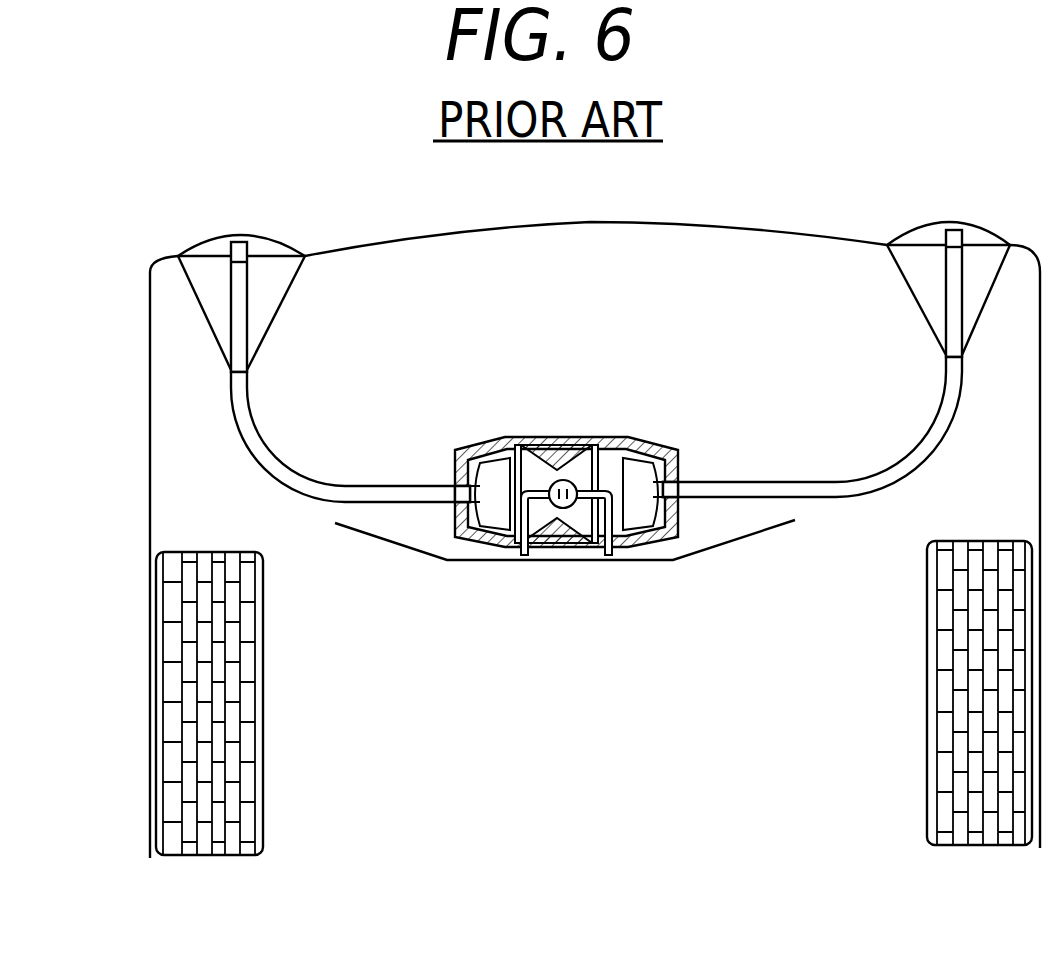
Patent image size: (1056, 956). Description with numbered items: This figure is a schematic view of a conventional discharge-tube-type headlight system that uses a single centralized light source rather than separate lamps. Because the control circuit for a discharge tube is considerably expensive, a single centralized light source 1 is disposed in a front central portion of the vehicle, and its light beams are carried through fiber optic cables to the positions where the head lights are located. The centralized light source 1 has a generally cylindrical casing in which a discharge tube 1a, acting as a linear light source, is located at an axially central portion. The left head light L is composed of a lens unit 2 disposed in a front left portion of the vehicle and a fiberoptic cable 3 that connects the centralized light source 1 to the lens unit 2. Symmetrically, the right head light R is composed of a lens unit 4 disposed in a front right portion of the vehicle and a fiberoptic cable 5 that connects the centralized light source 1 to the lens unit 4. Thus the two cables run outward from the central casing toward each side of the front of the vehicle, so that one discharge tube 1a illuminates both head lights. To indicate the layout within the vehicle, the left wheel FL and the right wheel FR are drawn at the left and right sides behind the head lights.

The centralized light source 1 is at (570, 487).
The discharge tube 1a is at (567, 508).
The lens unit 2 is at (273, 277).
The fiberoptic cable 3 is at (308, 480).
The lens unit 4 is at (922, 278).
The fiberoptic cable 5 is at (920, 446).
The left head light L is at (300, 232).
The right head light R is at (903, 206).
The left wheel FL is at (263, 718).
The right wheel FR is at (926, 718).